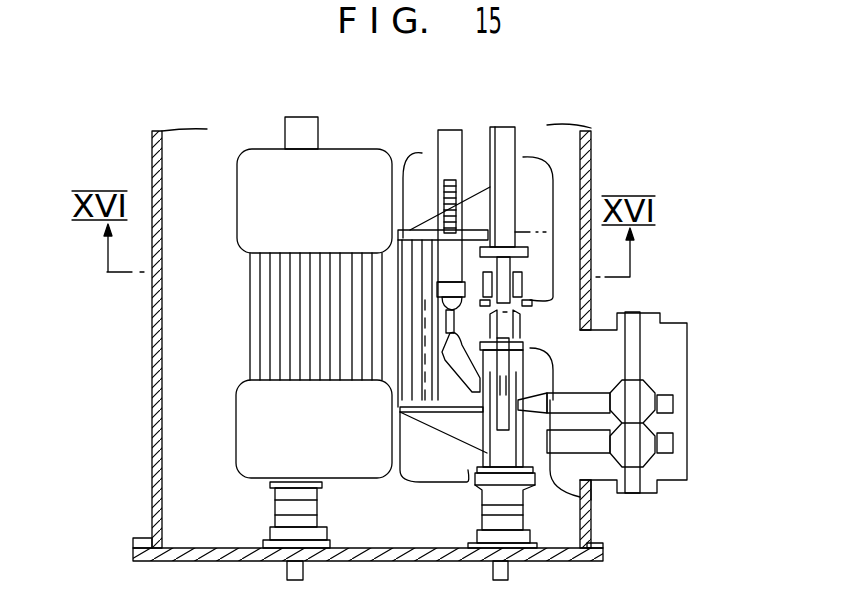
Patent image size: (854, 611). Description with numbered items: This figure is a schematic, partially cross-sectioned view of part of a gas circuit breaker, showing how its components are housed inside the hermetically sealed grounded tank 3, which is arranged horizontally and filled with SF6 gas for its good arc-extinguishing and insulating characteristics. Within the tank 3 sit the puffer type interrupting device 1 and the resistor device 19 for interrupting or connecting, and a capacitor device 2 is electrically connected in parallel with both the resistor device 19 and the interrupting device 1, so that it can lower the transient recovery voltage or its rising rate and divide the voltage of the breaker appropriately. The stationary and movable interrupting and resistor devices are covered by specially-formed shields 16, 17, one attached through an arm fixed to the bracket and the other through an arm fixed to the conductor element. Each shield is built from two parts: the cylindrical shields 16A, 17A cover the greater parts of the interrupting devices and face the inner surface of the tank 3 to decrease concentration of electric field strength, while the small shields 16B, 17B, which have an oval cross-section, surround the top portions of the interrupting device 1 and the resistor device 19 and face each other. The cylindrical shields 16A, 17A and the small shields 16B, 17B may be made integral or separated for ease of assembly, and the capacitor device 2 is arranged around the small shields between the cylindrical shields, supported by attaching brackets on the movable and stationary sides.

The interrupting device 1 is at (520, 321).
The capacitor device 2 is at (248, 311).
The grounded tank 3 is at (152, 425).
The shield 16 is at (322, 443).
The cylindrical shield 16A is at (590, 497).
The small shield 16B is at (550, 372).
The shield 17 is at (322, 216).
The cylindrical shield 17A is at (553, 170).
The small shield 17B is at (593, 295).
The resistor device 19 is at (458, 335).